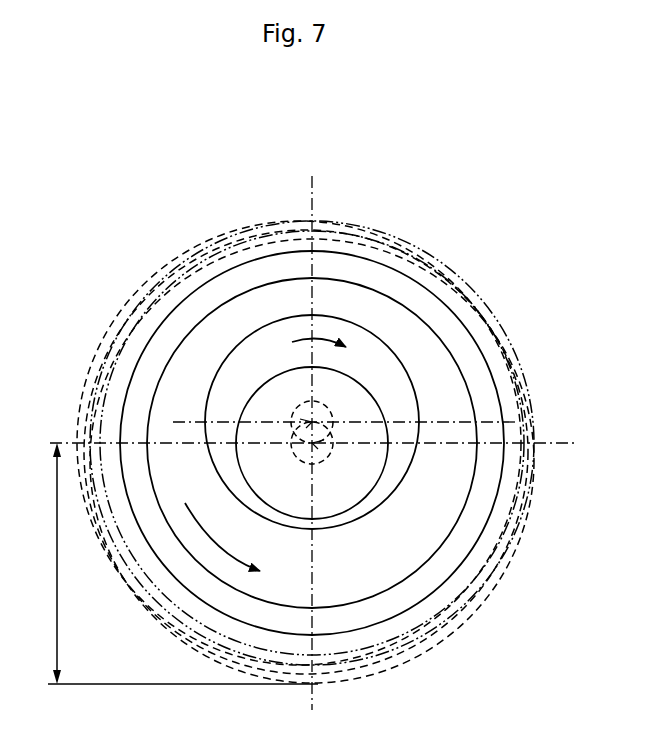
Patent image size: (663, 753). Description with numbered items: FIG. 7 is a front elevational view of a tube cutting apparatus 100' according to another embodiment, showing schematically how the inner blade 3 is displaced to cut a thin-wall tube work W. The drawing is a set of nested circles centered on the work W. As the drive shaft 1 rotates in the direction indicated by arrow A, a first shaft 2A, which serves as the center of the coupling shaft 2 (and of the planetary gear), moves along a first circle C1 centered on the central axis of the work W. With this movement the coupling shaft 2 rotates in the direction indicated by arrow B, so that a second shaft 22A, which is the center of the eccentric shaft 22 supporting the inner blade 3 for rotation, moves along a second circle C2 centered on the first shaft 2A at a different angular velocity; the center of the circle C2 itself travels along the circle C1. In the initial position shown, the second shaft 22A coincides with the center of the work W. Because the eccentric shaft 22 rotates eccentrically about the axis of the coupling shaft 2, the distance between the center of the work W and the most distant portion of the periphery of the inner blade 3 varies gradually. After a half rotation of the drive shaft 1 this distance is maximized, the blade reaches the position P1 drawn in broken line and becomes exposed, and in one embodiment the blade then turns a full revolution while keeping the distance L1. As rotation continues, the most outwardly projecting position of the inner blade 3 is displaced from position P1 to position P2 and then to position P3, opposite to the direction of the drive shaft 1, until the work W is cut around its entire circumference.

The drive shaft 1 is at (175, 350).
The coupling shaft 2 is at (400, 366).
The inner blade 3 is at (443, 300).
The eccentric shaft 22 is at (243, 411).
The first shaft 2A is at (318, 422).
The second shaft 22A is at (318, 445).
The tube cutting apparatus 100' is at (501, 174).
The work W is at (378, 226).
The first circle C1 is at (320, 445).
The second circle C2 is at (302, 415).
The position P1 is at (345, 684).
The position P2 is at (180, 647).
The position P3 is at (77, 490).
The distance L1 is at (183, 563).
The direction of rotation of drive shaft A is at (213, 522).
The direction of rotation of coupling shaft B is at (309, 339).